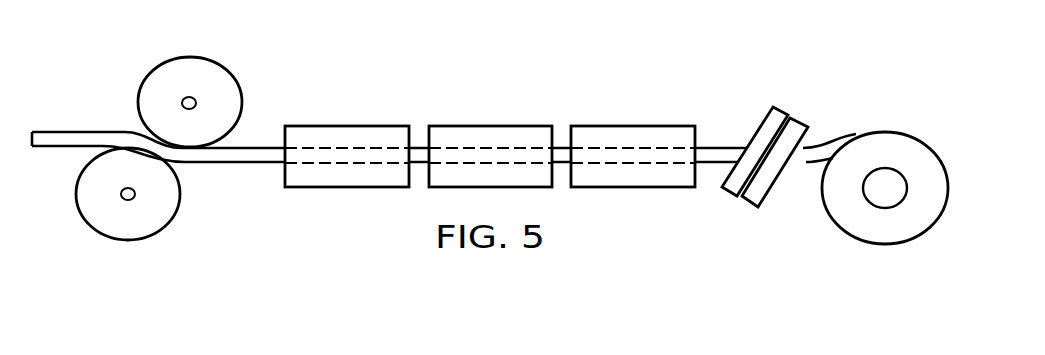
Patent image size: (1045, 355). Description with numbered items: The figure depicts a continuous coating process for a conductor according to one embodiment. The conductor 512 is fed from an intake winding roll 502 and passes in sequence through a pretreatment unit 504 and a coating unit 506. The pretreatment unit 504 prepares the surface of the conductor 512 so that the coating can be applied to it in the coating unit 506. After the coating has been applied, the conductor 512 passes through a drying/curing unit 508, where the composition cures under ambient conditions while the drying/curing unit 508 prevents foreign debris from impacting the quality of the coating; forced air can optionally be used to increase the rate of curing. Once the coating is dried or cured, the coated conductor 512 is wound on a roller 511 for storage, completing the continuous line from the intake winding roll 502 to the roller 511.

The intake winding roll 502 is at (190, 57).
The pretreatment unit 504 is at (347, 126).
The coating unit 506 is at (488, 126).
The drying/curing unit 508 is at (632, 126).
The roller 511 is at (885, 132).
The conductor 512 is at (240, 164).